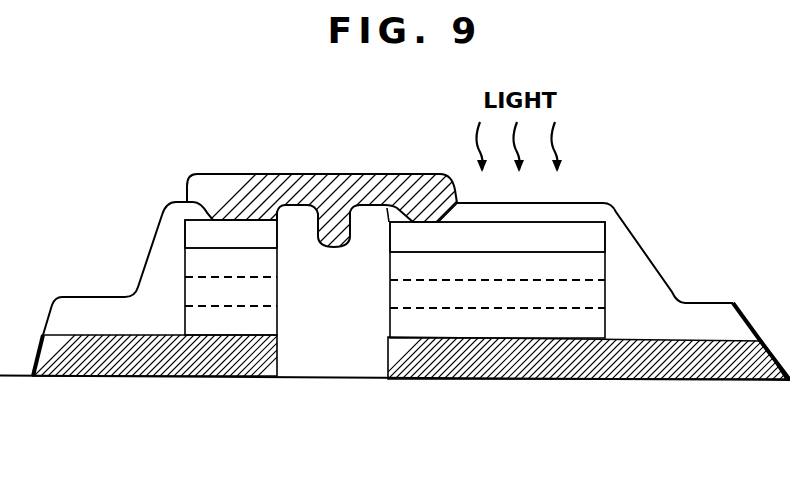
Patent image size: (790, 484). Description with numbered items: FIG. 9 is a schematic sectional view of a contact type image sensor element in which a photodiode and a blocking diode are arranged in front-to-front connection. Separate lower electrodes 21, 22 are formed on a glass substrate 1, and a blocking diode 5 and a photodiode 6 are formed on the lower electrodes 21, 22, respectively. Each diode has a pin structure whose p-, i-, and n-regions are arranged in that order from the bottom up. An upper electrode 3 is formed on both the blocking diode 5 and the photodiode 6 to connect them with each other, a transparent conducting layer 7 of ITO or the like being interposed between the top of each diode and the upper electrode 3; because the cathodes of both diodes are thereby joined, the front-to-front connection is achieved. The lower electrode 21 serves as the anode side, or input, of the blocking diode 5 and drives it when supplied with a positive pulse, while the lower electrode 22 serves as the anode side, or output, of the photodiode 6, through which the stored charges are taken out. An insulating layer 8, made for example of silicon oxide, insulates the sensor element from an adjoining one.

The glass substrate 1 is at (345, 388).
The lower electrode 21 is at (205, 367).
The lower electrode 22 is at (487, 372).
The upper electrode 3 is at (262, 233).
The blocking diode 5 is at (268, 322).
The photodiode 6 is at (600, 298).
The transparent conducting layer 7 is at (252, 220).
The insulating layer 8 is at (107, 307).